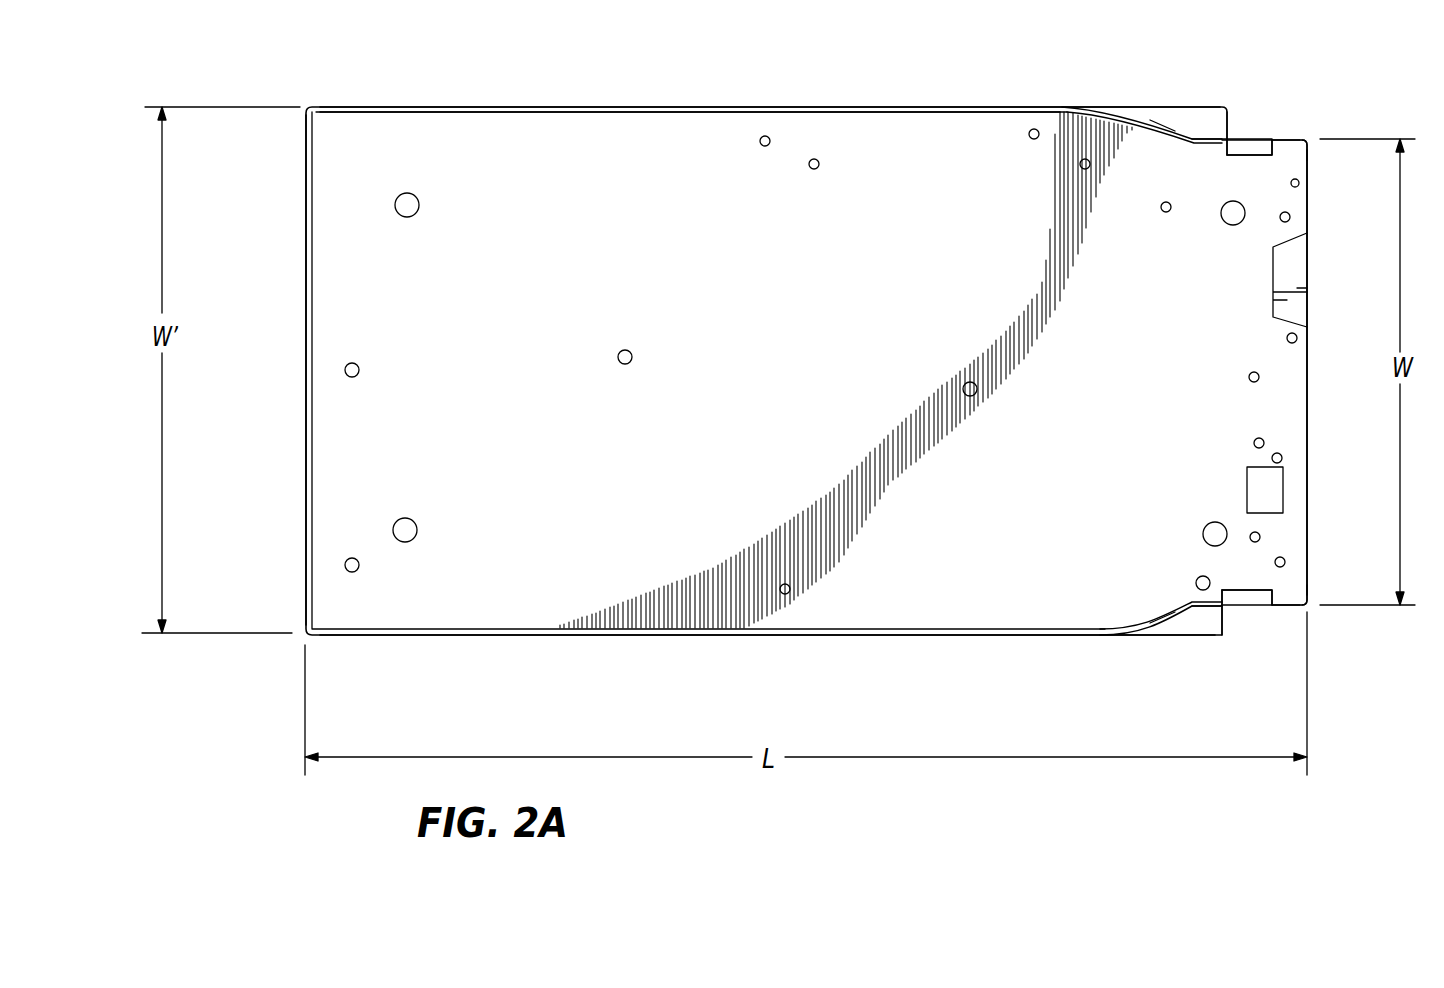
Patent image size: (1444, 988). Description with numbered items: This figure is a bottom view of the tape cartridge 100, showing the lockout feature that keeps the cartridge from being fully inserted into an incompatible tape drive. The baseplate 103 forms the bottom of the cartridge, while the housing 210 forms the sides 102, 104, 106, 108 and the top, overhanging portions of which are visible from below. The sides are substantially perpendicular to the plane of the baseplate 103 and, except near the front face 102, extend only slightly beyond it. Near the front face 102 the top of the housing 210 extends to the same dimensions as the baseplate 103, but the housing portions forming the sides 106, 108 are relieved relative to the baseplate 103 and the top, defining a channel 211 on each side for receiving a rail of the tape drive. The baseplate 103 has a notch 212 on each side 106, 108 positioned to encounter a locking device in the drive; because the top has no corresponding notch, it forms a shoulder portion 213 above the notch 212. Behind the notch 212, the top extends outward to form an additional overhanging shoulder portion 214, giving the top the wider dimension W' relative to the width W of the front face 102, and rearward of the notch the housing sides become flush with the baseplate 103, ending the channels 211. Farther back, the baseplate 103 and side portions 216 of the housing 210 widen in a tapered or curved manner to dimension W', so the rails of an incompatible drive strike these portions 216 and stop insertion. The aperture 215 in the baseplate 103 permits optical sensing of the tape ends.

The tape cartridge 100 is at (413, 127).
The front face 102 is at (1322, 434).
The baseplate 103 is at (867, 127).
The side 104 is at (298, 415).
The side 106 is at (945, 632).
The side 108 is at (777, 100).
The housing 210 is at (1148, 108).
The channel 211 is at (1308, 117).
The notch 212 is at (1272, 138).
The shoulder portion 213 is at (1252, 138).
The overhanging shoulder portion 214 is at (1207, 117).
The aperture 215 is at (1247, 488).
The side portion 216 is at (1175, 123).